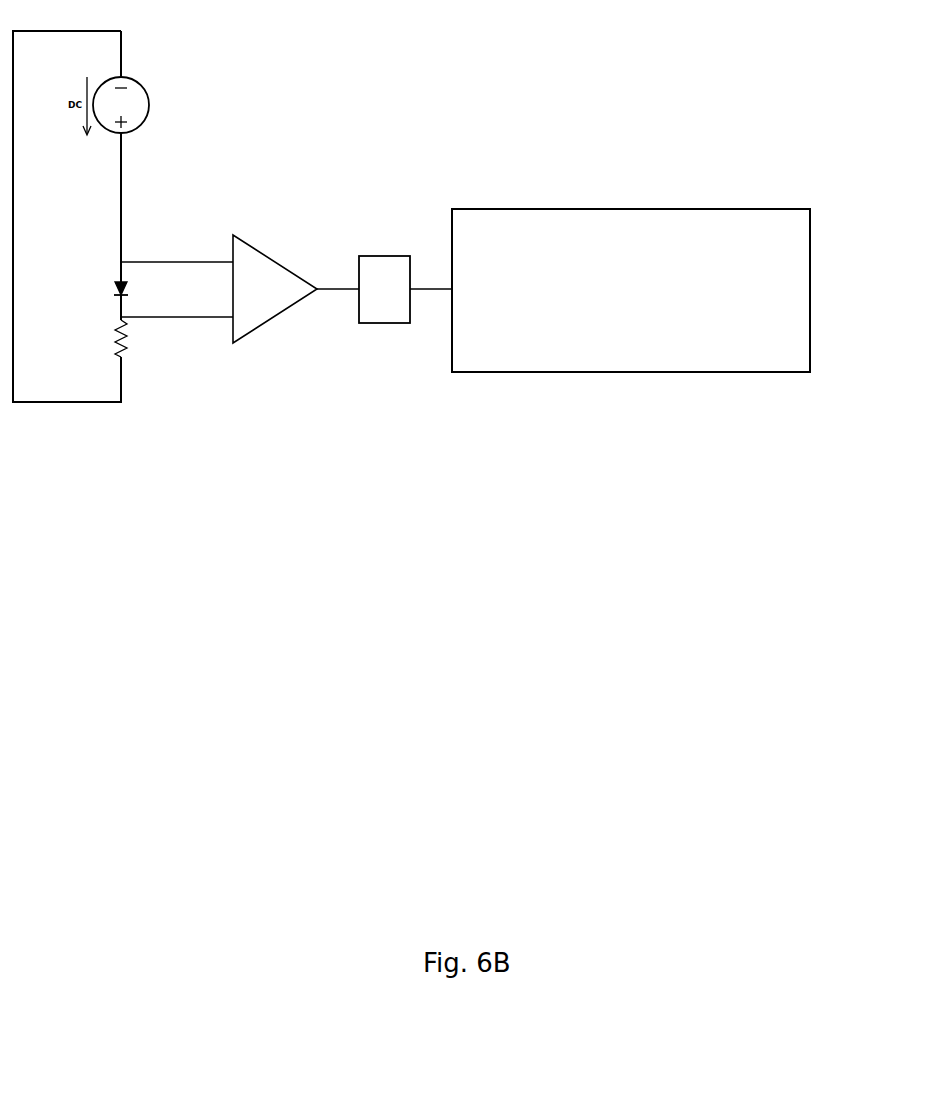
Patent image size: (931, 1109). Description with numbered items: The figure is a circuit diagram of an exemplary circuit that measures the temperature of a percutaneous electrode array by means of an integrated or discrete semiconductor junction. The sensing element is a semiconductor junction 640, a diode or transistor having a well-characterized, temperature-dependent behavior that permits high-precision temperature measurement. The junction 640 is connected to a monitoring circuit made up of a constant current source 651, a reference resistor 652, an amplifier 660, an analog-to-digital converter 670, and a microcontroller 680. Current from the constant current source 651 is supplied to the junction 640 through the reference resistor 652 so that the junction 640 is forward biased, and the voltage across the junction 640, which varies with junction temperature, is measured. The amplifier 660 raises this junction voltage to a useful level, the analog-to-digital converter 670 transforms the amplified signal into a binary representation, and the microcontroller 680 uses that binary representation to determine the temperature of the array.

The semiconductor junction 640 is at (118, 286).
The constant current source 651 is at (146, 90).
The reference resistor 652 is at (128, 355).
The amplifier 660 is at (277, 262).
The analog-to-digital converter 670 is at (366, 256).
The microcontroller 680 is at (811, 234).